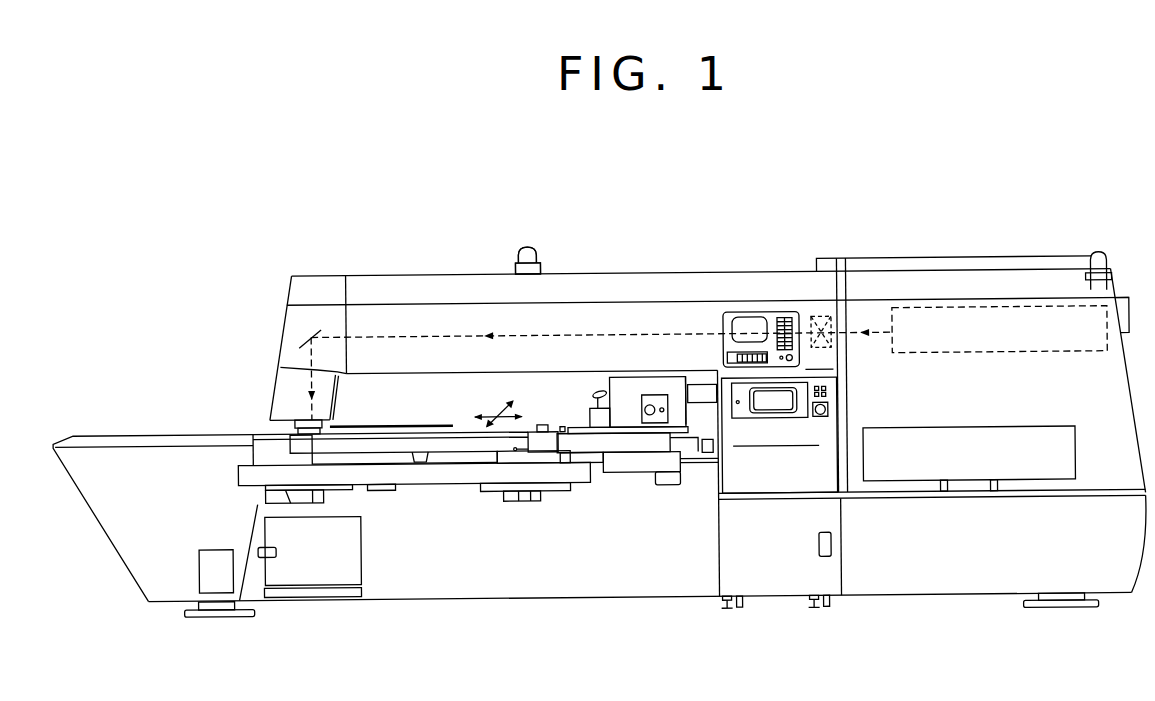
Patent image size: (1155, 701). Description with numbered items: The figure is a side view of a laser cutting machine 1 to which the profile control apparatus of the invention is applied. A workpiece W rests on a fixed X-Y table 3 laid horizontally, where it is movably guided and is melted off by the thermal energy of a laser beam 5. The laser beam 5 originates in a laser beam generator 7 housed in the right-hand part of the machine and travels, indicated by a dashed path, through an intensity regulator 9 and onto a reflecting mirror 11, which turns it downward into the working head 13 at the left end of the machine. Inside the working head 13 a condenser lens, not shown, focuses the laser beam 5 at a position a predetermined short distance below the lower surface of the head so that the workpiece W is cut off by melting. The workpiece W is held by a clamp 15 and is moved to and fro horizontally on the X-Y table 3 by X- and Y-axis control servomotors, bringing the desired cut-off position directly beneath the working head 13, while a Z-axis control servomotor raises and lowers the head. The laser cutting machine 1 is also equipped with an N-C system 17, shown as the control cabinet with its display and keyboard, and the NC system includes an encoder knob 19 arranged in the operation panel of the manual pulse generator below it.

The laser cutting machine 1 is at (669, 266).
The X-Y table 3 is at (425, 438).
The laser beam 5 is at (567, 307).
The laser beam generator 7 is at (1007, 307).
The intensity regulator 9 is at (812, 318).
The reflecting mirror 11 is at (308, 330).
The working head 13 is at (308, 417).
The clamp 15 is at (595, 413).
The N-C system 17 is at (737, 309).
The encoder knob 19 is at (825, 435).
The workpiece W is at (387, 422).